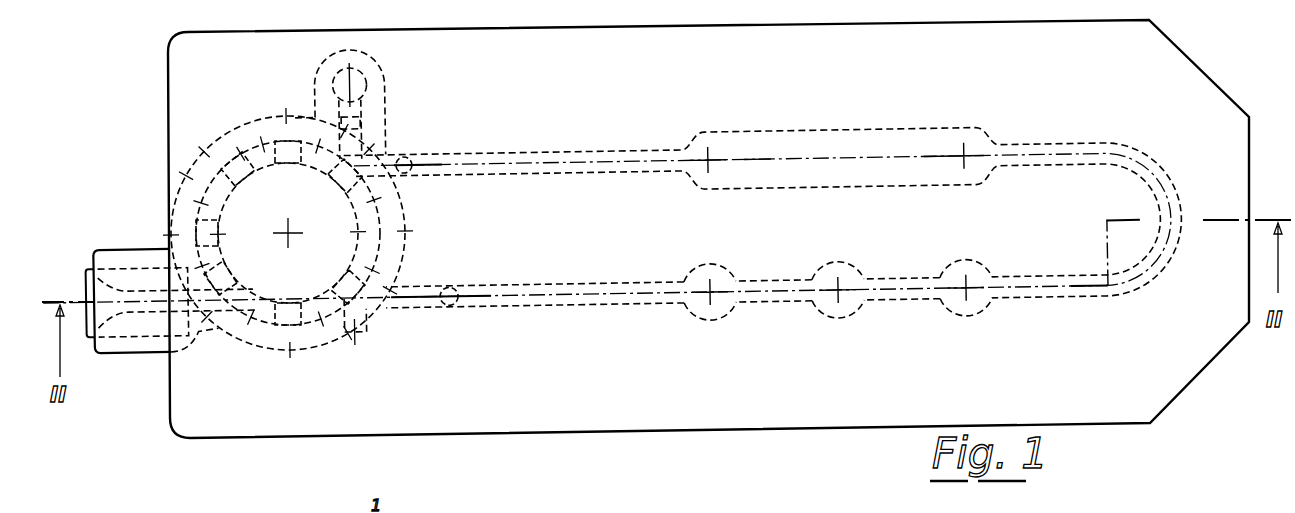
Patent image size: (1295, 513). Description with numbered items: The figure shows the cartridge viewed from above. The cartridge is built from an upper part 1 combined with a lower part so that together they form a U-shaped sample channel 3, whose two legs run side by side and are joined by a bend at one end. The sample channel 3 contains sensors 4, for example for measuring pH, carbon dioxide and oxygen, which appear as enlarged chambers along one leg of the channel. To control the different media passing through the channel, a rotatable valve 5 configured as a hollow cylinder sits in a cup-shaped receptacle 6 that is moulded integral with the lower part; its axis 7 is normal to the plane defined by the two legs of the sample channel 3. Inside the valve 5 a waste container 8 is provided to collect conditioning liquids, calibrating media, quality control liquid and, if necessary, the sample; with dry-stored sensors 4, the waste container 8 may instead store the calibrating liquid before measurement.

The upper part 1 is at (818, 63).
The sample channel 3 is at (556, 154).
The sensors 4 is at (710, 321).
The rotatable valve 5 is at (232, 143).
The cup-shaped receptacle 6 is at (400, 232).
The axis 7 is at (294, 244).
The waste container 8 is at (200, 215).